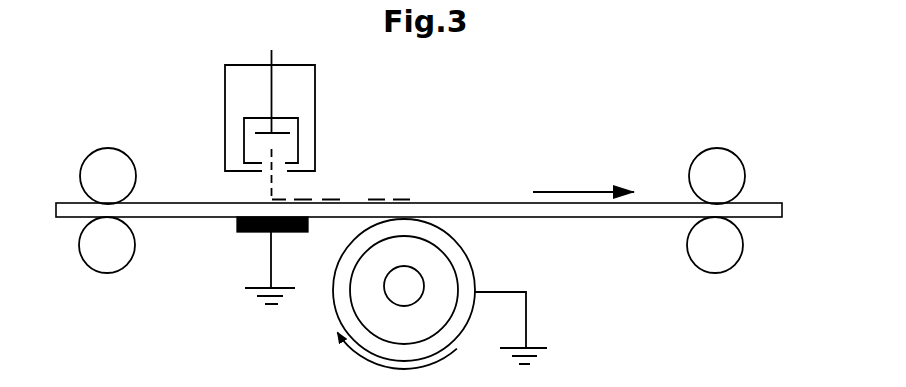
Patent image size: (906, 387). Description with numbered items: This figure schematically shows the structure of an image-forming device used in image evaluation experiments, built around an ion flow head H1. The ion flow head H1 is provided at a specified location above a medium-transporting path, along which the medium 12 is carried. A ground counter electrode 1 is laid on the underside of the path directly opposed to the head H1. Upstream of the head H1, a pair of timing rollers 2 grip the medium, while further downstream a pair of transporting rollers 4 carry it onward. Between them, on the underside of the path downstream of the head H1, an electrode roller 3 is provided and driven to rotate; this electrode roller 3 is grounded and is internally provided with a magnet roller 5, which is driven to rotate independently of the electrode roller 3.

The ion flow head H1 is at (223, 88).
The recording medium 12 is at (477, 201).
The ground counter electrode 1 is at (237, 233).
The timing rollers 2 is at (103, 276).
The electrode roller 3 is at (337, 308).
The transporting rollers 4 is at (715, 275).
The magnet roller 5 is at (437, 260).